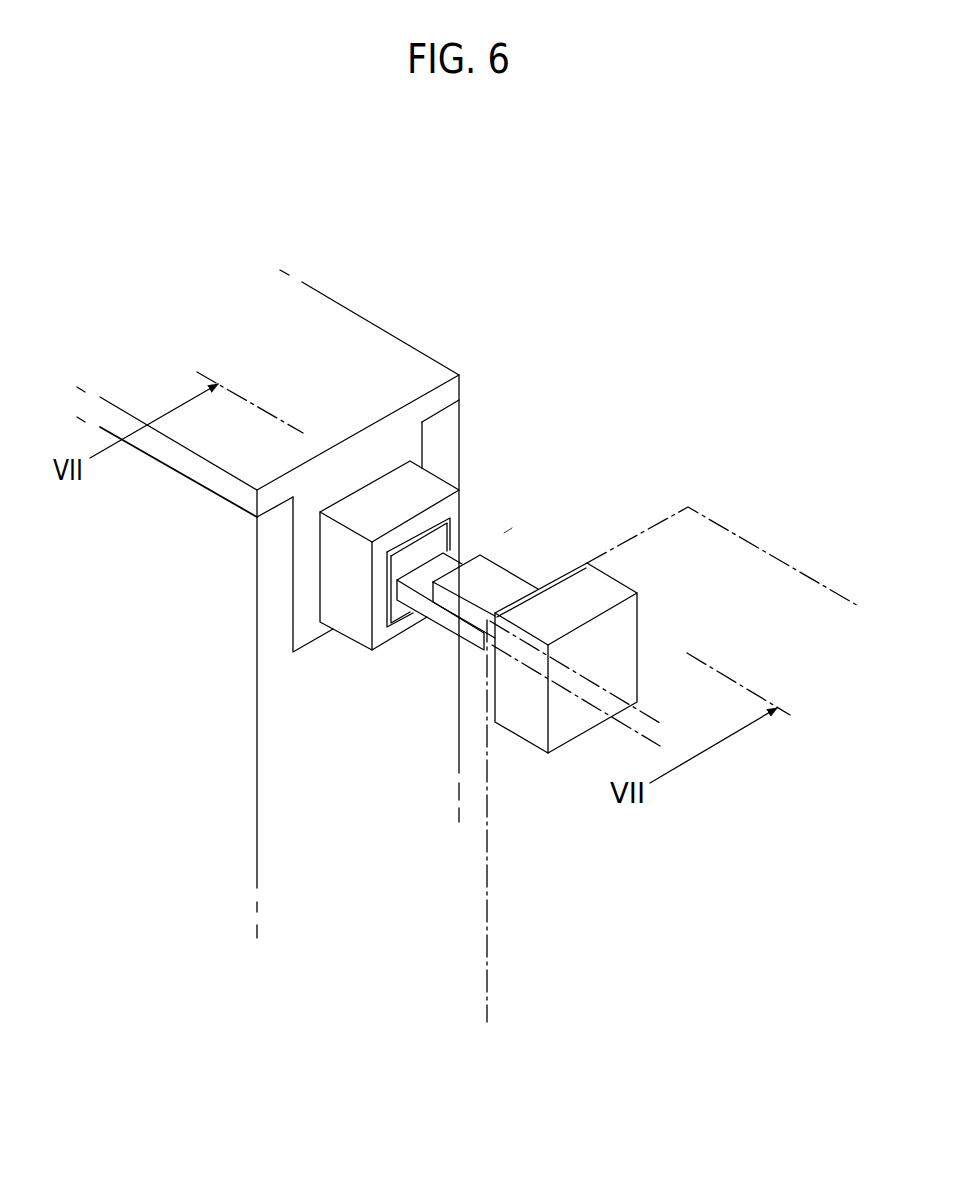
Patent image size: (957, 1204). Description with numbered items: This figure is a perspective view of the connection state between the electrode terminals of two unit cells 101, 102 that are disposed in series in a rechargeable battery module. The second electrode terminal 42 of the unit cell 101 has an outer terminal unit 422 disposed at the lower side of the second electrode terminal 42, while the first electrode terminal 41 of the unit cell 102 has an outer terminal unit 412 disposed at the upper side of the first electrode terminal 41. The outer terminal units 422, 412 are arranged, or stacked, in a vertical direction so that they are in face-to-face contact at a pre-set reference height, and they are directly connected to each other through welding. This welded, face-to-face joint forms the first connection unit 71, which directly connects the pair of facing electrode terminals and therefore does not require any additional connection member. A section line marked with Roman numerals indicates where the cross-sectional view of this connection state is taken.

The unit cell 101 is at (307, 361).
The unit cell 102 is at (785, 635).
The first electrode terminal 41 is at (569, 565).
The outer terminal unit 412 is at (498, 575).
The second electrode terminal 42 is at (457, 483).
The outer terminal unit 422 is at (442, 619).
The first connection unit 71 is at (507, 530).